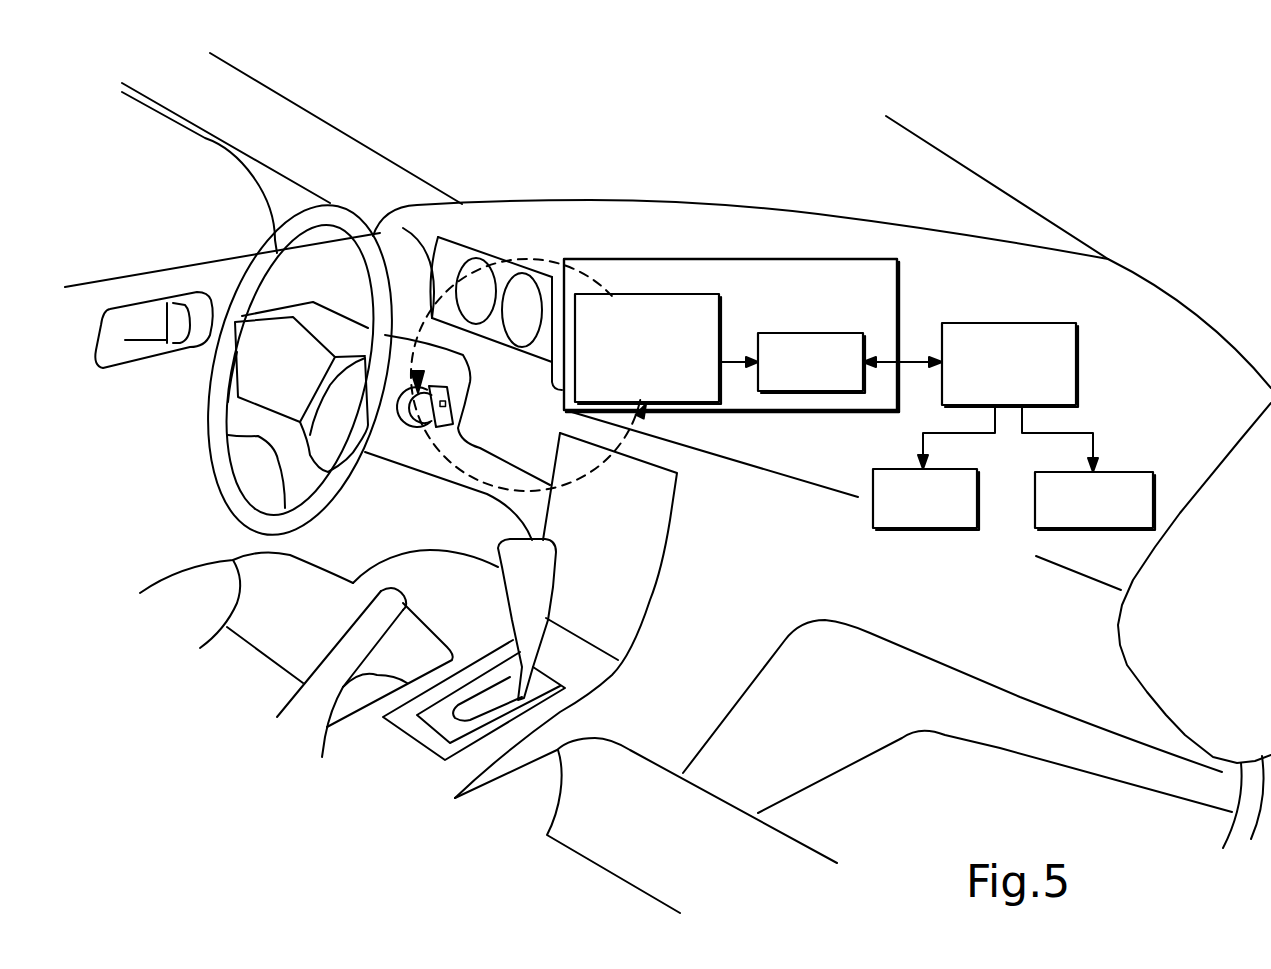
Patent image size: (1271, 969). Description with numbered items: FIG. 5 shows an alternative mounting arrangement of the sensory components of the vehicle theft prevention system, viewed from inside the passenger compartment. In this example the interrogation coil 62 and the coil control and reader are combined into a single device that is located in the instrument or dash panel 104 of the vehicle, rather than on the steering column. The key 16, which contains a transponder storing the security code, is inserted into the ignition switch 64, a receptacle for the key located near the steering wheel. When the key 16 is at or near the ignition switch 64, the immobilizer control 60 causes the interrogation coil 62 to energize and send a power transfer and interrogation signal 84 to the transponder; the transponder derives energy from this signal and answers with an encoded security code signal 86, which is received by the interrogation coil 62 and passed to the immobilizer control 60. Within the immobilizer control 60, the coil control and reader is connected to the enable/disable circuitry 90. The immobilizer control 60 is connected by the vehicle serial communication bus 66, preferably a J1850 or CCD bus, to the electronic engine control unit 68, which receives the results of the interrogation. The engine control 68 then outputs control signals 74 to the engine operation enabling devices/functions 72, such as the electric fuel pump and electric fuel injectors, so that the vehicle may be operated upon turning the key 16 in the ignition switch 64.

The instrument or dash panel 104 is at (590, 202).
The power transfer and interrogation signal 84 is at (530, 258).
The interrogation coil 62 is at (637, 294).
The encoded security code signal 86 is at (585, 484).
The immobilizer control 60 is at (884, 260).
The enable/disable circuitry 90 is at (813, 385).
The vehicle serial communication bus 66 is at (906, 362).
The electronic engine control unit 68 is at (1068, 366).
The control signals 74 is at (1043, 433).
The engine operation enabling devices/functions 72 is at (1052, 523).
The key 16 is at (452, 387).
The ignition switch 64 is at (412, 430).